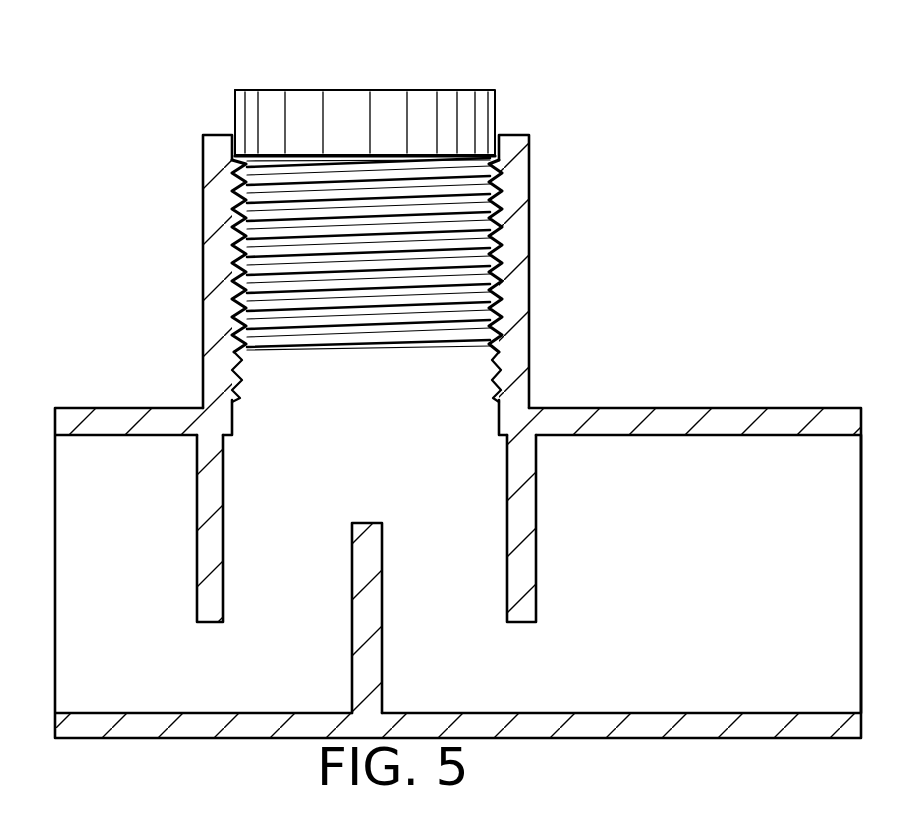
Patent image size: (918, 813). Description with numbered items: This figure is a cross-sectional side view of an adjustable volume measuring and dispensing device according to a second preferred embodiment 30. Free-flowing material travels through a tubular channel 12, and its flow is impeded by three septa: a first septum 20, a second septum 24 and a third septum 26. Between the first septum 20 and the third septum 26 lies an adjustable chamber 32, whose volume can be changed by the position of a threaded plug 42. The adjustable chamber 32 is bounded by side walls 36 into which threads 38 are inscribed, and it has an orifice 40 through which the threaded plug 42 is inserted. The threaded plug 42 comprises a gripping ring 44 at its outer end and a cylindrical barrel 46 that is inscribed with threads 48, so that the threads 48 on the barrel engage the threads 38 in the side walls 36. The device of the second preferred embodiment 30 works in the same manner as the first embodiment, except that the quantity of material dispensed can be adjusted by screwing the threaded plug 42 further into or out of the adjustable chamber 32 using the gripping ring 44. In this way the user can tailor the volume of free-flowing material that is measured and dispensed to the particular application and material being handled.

The tubular channel 12 is at (700, 407).
The first septum 20 is at (536, 541).
The second septum 24 is at (382, 618).
The third septum 26 is at (224, 555).
The second preferred embodiment 30 is at (651, 202).
The adjustable chamber 32 is at (262, 372).
The side walls 36 is at (203, 247).
The threads 38 is at (232, 185).
The orifice 40 is at (316, 118).
The threaded plug 42 is at (392, 102).
The gripping ring 44 is at (236, 105).
The cylindrical barrel 46 is at (447, 263).
The threads 48 is at (228, 160).